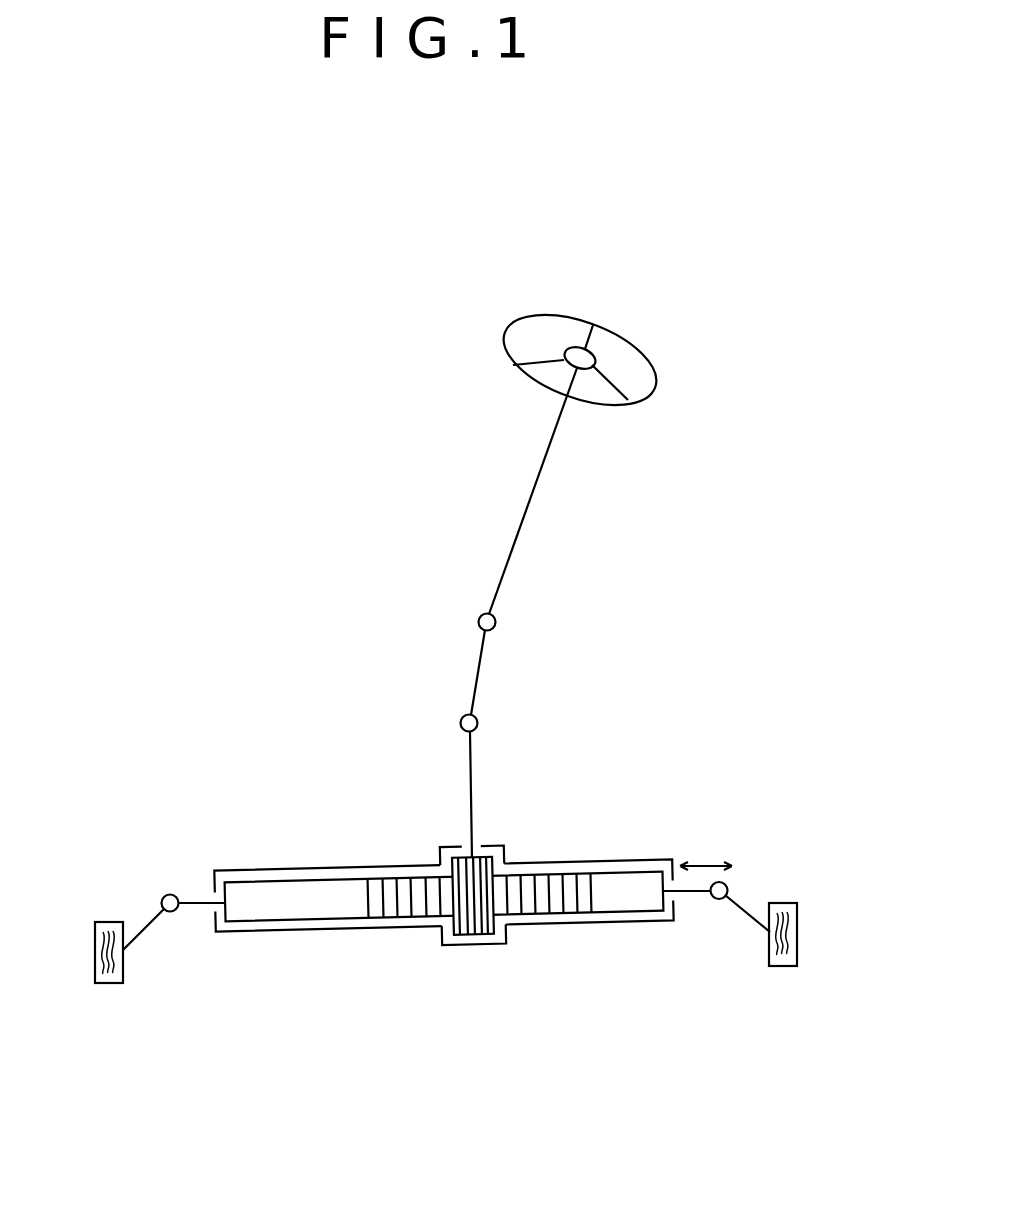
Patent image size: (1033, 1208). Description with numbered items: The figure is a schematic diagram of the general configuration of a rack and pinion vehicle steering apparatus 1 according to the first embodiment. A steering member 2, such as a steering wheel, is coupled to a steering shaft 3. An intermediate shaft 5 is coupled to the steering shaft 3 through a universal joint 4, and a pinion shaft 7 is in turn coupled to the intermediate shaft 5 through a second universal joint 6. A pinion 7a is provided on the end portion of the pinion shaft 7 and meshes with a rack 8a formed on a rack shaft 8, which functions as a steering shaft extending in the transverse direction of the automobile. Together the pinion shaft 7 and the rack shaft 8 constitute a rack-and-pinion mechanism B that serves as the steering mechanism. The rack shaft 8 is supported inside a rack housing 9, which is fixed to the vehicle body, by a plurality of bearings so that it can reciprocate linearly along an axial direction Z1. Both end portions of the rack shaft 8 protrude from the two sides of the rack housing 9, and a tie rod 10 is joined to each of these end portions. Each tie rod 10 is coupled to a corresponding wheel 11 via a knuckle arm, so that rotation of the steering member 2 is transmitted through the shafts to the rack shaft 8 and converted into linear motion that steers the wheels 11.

The vehicle steering apparatus 1 is at (673, 312).
The steering member 2 is at (568, 316).
The steering shaft 3 is at (533, 491).
The universal joint 4 is at (496, 622).
The intermediate shaft 5 is at (477, 668).
The universal joint 6 is at (478, 723).
The pinion shaft 7 is at (475, 809).
The pinion 7a is at (483, 937).
The rack shaft 8 is at (543, 915).
The rack 8a is at (417, 910).
The rack housing 9 is at (353, 865).
The tie rod 10 is at (143, 935).
The wheel 11 is at (107, 985).
The rack-and-pinion mechanism B is at (515, 944).
The axial direction Z1 is at (705, 866).